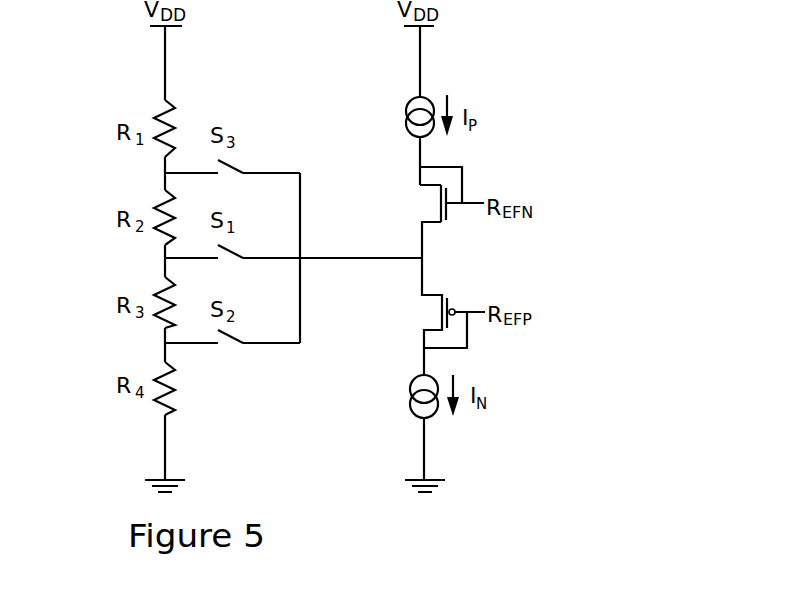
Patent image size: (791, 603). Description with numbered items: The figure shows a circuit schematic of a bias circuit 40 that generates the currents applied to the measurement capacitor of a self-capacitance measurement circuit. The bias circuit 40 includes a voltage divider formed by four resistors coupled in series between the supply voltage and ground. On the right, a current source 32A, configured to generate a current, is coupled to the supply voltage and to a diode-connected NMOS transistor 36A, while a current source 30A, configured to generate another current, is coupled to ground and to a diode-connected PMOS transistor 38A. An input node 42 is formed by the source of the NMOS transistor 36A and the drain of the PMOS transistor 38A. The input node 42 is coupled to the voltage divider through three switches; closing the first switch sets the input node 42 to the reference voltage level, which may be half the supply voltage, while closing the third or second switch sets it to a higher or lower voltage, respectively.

The current source 30A is at (395, 407).
The current source 32A is at (390, 124).
The NMOS transistor 36A is at (409, 206).
The PMOS transistor 38A is at (409, 312).
The bias circuit 40 is at (575, 77).
The input node 42 is at (448, 270).